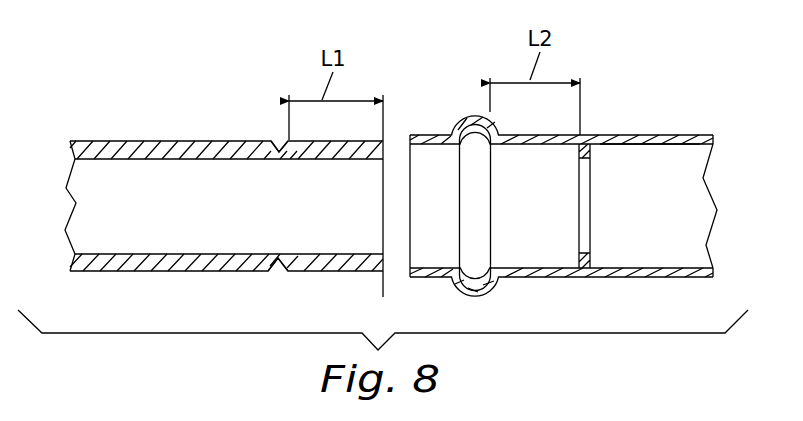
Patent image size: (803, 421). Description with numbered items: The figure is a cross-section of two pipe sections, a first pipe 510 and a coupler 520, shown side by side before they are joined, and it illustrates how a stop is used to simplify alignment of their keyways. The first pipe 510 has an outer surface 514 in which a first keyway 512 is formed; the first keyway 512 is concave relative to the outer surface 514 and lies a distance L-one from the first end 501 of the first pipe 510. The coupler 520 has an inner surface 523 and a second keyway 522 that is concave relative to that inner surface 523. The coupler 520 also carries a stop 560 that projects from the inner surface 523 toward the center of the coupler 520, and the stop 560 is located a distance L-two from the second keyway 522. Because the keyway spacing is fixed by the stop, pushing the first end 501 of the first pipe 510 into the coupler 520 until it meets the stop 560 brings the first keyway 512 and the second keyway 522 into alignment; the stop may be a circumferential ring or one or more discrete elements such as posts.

The first pipe 510 is at (104, 139).
The outer surface 514 is at (166, 141).
The first keyway 512 is at (278, 260).
The first end 501 is at (377, 208).
The coupler 520 is at (673, 134).
The second keyway 522 is at (466, 127).
The inner surface 523 is at (637, 144).
The stop 560 is at (590, 266).